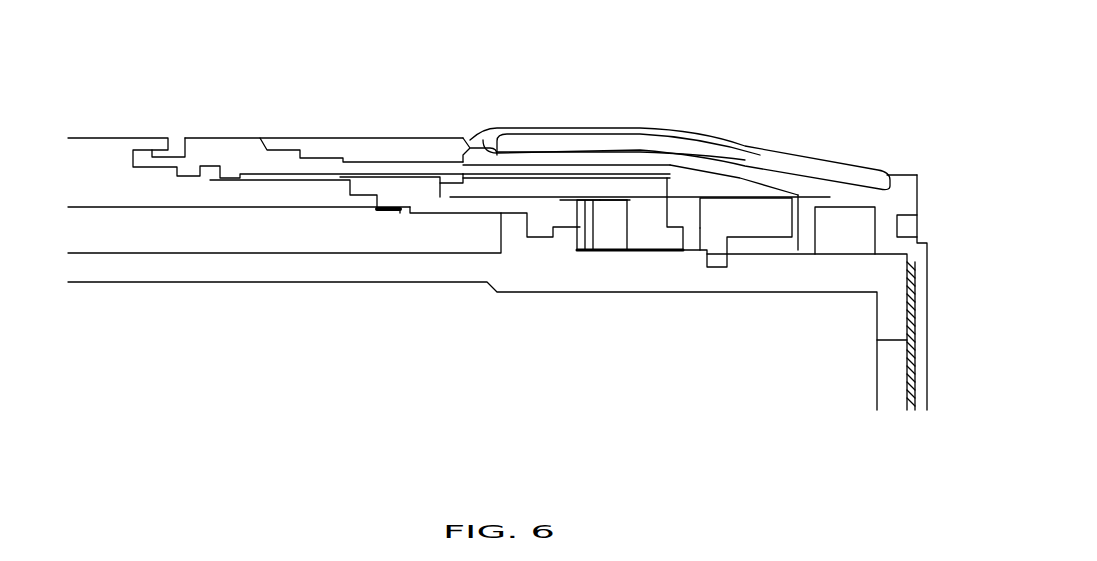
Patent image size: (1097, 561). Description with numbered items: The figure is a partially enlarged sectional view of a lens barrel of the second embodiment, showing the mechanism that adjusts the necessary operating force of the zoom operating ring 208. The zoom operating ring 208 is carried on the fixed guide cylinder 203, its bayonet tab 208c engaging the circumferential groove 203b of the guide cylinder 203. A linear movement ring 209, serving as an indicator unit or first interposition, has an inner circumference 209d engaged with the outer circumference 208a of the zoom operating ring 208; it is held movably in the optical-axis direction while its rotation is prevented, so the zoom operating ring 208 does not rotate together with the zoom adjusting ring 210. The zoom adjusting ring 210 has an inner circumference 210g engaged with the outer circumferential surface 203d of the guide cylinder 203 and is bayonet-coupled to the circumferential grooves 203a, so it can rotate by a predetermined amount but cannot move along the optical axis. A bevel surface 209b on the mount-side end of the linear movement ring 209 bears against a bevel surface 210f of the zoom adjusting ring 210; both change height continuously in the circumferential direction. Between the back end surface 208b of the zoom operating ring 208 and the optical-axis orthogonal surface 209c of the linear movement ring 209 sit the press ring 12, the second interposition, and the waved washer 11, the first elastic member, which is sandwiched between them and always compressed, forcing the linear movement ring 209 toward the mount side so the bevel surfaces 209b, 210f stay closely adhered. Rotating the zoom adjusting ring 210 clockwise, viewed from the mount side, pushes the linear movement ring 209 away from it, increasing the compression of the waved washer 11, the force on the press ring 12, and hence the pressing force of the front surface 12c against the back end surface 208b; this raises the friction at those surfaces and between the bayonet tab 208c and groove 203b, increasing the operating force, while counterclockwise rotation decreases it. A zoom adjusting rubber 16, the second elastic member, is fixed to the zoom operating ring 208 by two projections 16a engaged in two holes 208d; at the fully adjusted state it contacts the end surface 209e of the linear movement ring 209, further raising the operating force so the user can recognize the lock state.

The waved washer 11 is at (597, 210).
The press ring 12 is at (590, 205).
The front surface of press ring 12c is at (580, 210).
The zoom adjusting rubber 16 is at (398, 190).
The projections of zoom adjusting rubber 16a is at (403, 193).
The guide cylinder 203 is at (813, 283).
The circumferential grooves of guide cylinder 203a is at (722, 262).
The circumferential groove of guide cylinder 203b is at (526, 218).
The outer circumferential surface of guide cylinder 203d is at (653, 240).
The zoom operating ring 208 is at (95, 162).
The outer circumference of zoom operating ring 208a is at (207, 157).
The back end surface of zoom operating ring 208b is at (587, 218).
The bayonet tab 208c is at (528, 225).
The holes in zoom operating ring 208d is at (392, 215).
The linear movement ring 209 is at (223, 162).
The bevel surface of linear movement ring 209b is at (703, 182).
The optical-axis orthogonal surface of linear movement ring 209c is at (620, 195).
The inner circumference of linear movement ring 209d is at (223, 175).
The end surface of linear movement ring 209e is at (457, 175).
The zoom adjusting ring 210 is at (375, 147).
The bevel surface of zoom adjusting ring 210f is at (647, 173).
The inner circumference of zoom adjusting ring 210g is at (700, 217).